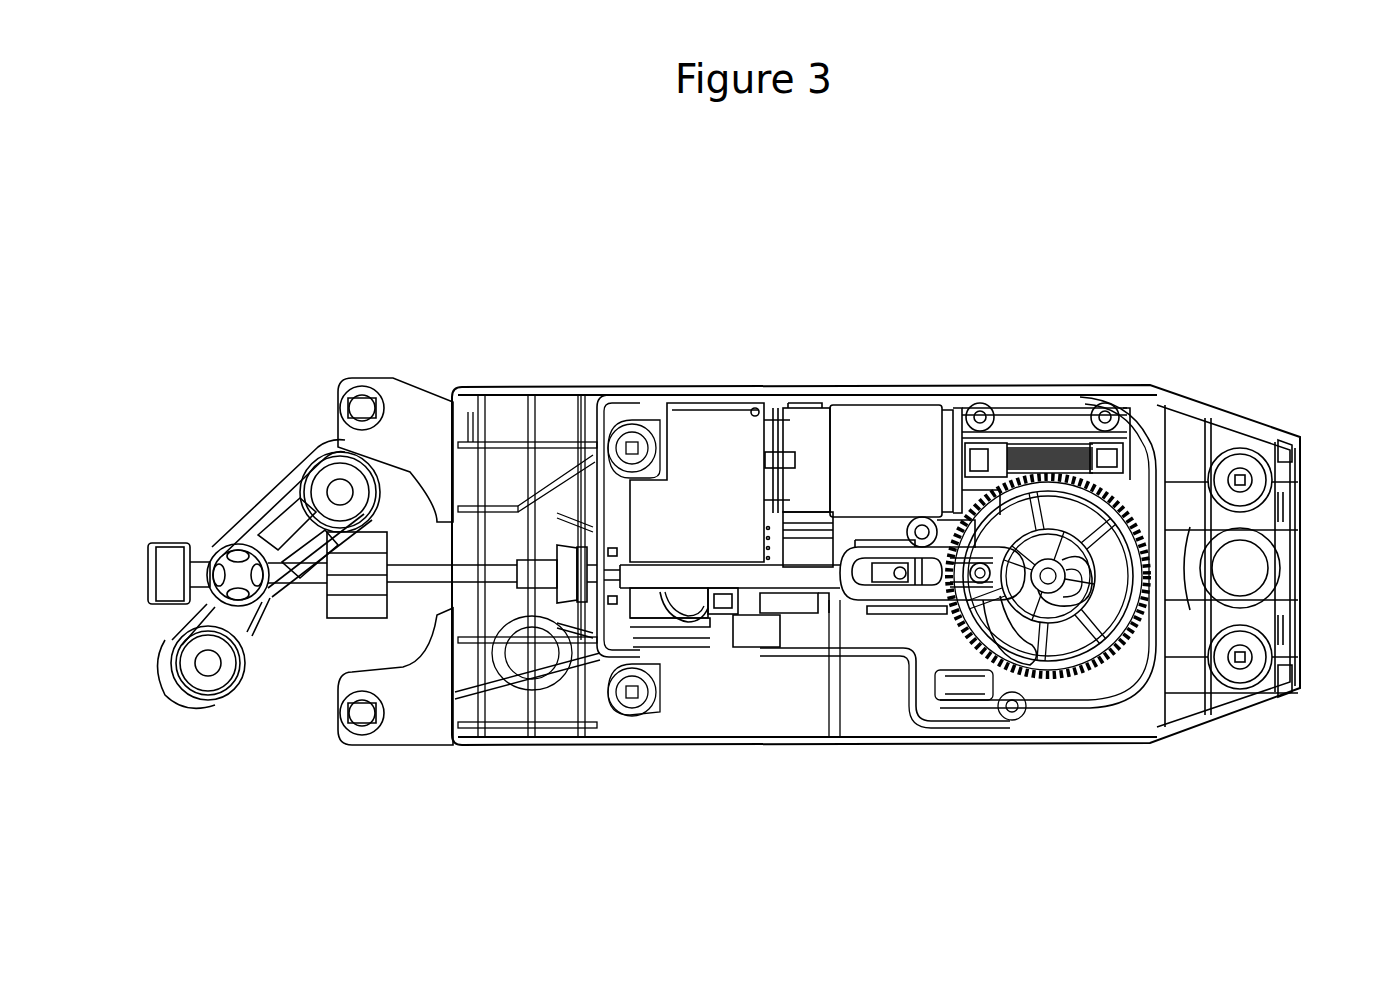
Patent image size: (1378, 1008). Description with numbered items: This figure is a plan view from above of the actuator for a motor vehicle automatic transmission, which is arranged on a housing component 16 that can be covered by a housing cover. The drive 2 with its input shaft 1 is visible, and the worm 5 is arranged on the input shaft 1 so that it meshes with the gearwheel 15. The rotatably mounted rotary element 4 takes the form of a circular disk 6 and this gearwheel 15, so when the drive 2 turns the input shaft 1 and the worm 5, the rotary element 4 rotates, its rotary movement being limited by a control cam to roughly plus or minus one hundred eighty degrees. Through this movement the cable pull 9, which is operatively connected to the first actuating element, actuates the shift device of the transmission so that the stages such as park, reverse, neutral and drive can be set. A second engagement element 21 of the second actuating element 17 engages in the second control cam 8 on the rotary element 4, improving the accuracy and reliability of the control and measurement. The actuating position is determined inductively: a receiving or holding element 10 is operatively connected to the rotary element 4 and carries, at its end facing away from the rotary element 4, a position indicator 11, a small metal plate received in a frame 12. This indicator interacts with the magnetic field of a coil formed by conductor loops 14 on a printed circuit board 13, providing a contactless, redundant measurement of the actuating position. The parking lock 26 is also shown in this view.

The input shaft 1 is at (968, 458).
The drive 2 is at (899, 430).
The rotary element 4 is at (1122, 495).
The worm 5 is at (1040, 452).
The circular disk 6 is at (1048, 576).
The second control cam 8 is at (1078, 575).
The cable pull 9 is at (420, 577).
The receiving or holding element 10 is at (840, 600).
The position indicator 11 is at (718, 600).
The frame 12 is at (723, 605).
The printed circuit board 13 is at (714, 436).
The conductor loops 14 is at (662, 597).
The gearwheel 15 is at (1049, 576).
The housing component 16 is at (551, 460).
The second actuating element 17 is at (1004, 578).
The second engagement element 21 is at (978, 588).
The parking lock 26 is at (275, 485).